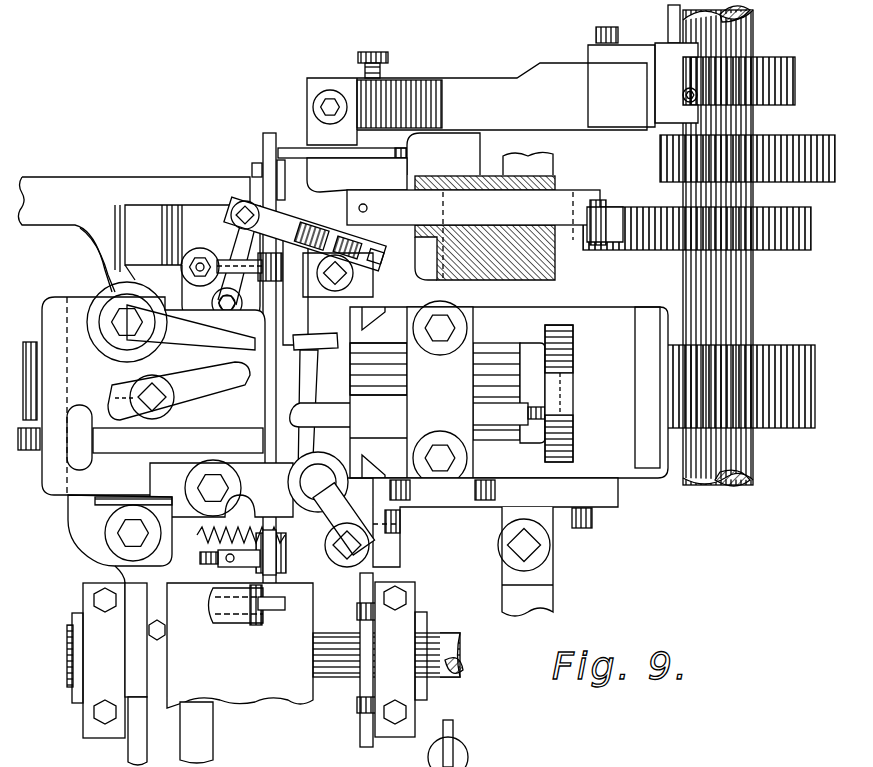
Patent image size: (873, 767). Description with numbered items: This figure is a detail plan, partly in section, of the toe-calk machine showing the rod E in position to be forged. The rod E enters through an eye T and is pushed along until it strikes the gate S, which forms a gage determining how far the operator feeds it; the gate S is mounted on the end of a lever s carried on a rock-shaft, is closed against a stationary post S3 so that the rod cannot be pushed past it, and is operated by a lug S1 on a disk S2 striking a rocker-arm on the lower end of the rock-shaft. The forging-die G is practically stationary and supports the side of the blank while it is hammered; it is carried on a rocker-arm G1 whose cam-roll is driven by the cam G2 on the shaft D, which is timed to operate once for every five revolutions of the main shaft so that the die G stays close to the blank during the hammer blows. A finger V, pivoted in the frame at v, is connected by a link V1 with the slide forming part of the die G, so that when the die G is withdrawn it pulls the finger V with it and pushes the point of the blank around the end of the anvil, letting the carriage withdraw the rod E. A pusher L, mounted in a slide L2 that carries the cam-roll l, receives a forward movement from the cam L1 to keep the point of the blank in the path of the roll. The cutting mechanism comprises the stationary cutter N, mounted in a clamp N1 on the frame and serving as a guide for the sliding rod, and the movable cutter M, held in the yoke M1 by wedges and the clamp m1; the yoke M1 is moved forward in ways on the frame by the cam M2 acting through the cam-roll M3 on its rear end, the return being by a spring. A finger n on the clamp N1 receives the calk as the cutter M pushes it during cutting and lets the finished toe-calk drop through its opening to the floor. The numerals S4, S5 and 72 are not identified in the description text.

The shaft D is at (730, 246).
The forging-die G is at (285, 140).
The rocker-arm G1 is at (435, 162).
The cam G2 is at (775, 82).
The pusher L is at (338, 198).
The cam L1 is at (805, 230).
The slide L2 is at (570, 192).
The cam-roll l is at (615, 222).
The movable cutter M is at (348, 414).
The yoke M1 is at (509, 393).
The clamp m1 is at (440, 393).
The cam M2 is at (780, 415).
The cam-roll M3 is at (612, 373).
The finger V is at (244, 242).
The link V1 is at (300, 212).
The pivot v is at (220, 302).
The gate S is at (315, 329).
The lever s is at (308, 415).
The lug S1 is at (331, 509).
The disk S2 is at (257, 551).
The stationary post S3 is at (171, 322).
The S⁴ S4 is at (172, 487).
The S⁵ S5 is at (202, 545).
The stationary cutter N is at (178, 414).
The clamp N1 is at (141, 396).
The finger n is at (179, 391).
The eye T is at (221, 488).
The rod E is at (265, 645).
The pin 7² 72 is at (300, 600).